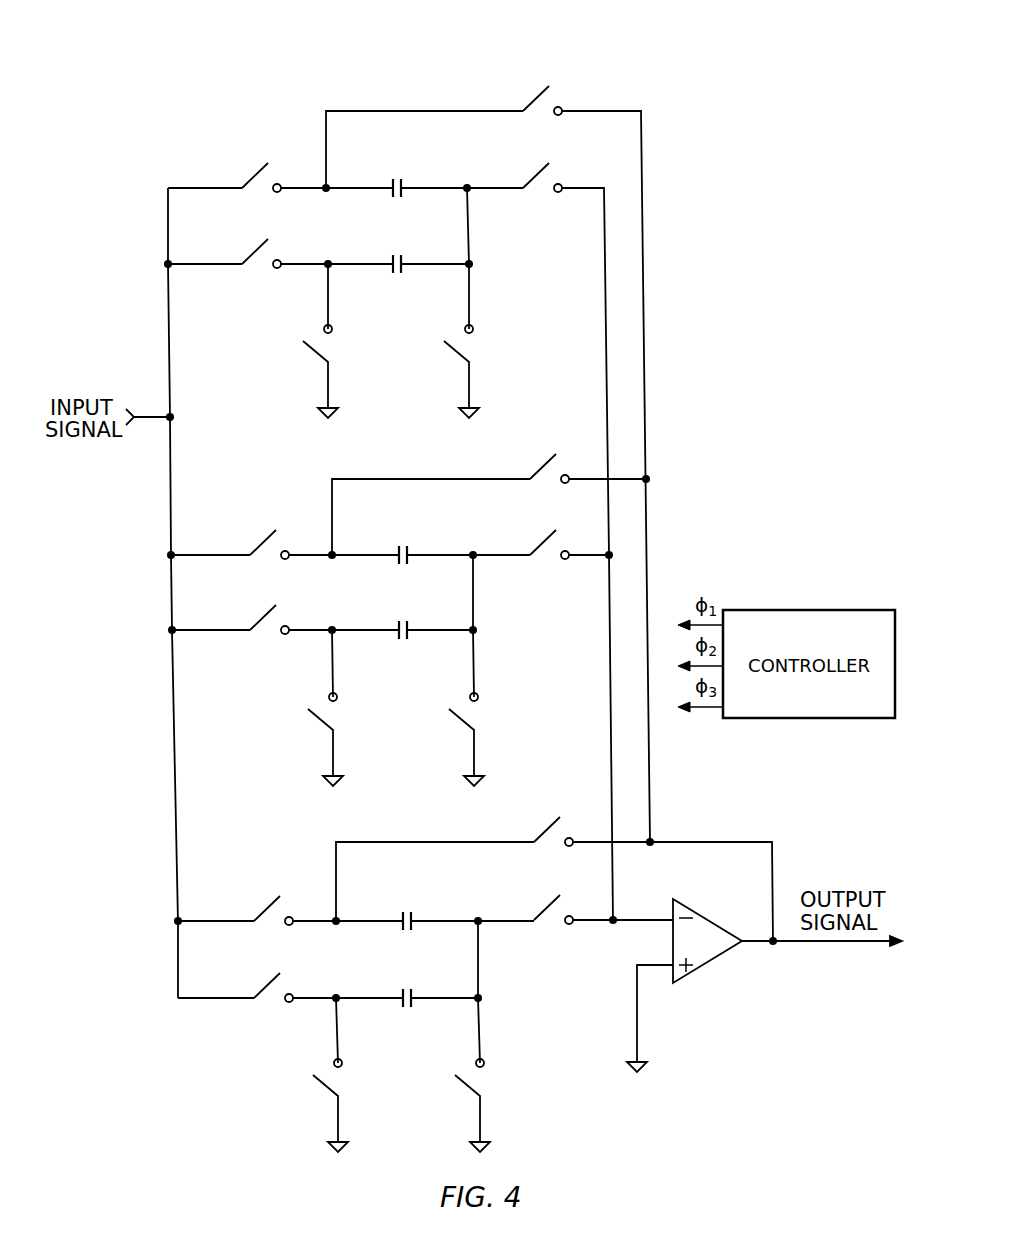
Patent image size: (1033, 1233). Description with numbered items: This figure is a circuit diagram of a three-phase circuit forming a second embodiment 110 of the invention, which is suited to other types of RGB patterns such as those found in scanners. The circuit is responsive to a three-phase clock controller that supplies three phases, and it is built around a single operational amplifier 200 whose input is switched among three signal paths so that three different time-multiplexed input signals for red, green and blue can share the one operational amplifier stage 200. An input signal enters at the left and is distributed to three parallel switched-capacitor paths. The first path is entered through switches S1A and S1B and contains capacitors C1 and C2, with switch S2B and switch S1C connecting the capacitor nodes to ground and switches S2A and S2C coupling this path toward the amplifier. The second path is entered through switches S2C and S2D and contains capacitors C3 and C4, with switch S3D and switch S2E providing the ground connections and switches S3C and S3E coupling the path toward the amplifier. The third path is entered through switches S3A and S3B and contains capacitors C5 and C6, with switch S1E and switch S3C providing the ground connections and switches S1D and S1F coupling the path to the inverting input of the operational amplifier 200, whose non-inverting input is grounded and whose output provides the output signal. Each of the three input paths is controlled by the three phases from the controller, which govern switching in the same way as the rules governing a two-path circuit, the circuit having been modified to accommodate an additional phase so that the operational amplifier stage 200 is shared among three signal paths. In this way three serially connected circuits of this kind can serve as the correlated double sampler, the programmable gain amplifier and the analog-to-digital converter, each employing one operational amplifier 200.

The second embodiment 110 is at (127, 76).
The operational amplifier 200 is at (707, 918).
The switch S1A is at (258, 173).
The switch S1B is at (258, 249).
The switch S1C is at (458, 353).
The switch S1D is at (550, 830).
The switch S1E is at (327, 1089).
The switch S1F is at (550, 906).
The switch S2A is at (540, 93).
The switch S2B is at (317, 353).
The switch S2C is at (540, 168).
The switch S2D is at (266, 616).
The switch S2E is at (463, 721).
The switch S3A is at (270, 909).
The switch S3B is at (270, 984).
The switch S3C is at (546, 465).
The switch S3D is at (322, 721).
The switch S3E is at (546, 541).
The capacitor C1 is at (396, 174).
The capacitor C2 is at (396, 249).
The capacitor C3 is at (401, 541).
The capacitor C4 is at (401, 616).
The capacitor C5 is at (406, 908).
The capacitor C6 is at (406, 984).